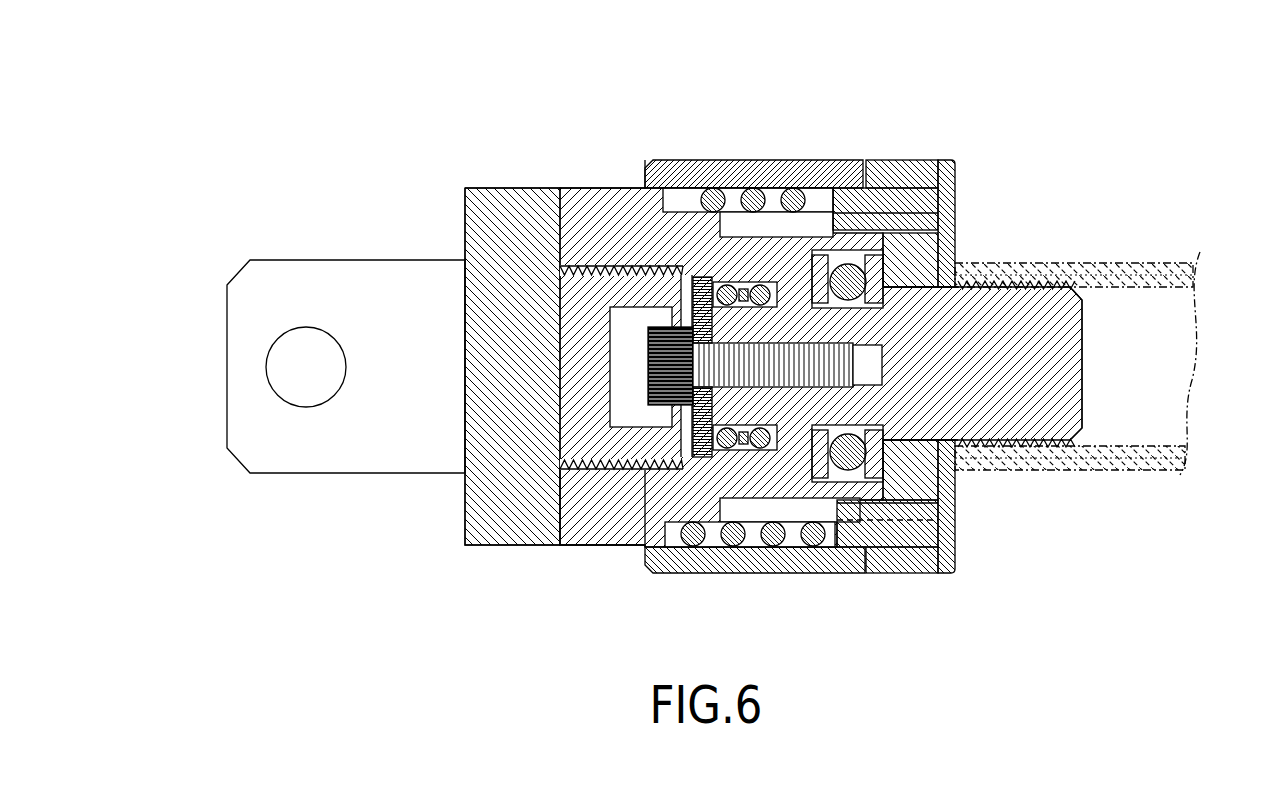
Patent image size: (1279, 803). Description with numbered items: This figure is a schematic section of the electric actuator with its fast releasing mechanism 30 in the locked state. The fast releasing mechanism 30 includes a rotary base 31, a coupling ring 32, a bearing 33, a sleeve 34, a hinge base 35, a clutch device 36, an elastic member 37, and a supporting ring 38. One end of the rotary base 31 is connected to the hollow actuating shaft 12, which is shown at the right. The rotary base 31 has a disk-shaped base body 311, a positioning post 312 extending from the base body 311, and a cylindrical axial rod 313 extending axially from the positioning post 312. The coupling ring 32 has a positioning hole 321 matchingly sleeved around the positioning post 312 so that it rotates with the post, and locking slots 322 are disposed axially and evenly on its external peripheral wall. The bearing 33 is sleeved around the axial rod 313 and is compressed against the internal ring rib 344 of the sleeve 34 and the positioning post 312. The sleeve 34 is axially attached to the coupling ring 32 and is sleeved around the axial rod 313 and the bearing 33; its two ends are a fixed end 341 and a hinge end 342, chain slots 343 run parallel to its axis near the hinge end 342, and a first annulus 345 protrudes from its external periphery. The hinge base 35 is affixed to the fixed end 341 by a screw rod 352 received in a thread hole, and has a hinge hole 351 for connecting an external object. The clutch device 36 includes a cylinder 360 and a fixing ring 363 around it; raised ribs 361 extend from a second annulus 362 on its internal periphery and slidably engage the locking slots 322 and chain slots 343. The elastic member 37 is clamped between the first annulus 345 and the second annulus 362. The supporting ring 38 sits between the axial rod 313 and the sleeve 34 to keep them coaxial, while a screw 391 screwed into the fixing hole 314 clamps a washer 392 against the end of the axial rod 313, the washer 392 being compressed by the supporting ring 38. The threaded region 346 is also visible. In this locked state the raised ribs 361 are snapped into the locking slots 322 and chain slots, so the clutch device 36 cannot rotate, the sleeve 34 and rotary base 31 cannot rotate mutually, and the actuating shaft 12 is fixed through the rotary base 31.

The actuating shaft 12 is at (1130, 265).
The fast releasing mechanism 30 is at (762, 300).
The rotary base 31 is at (957, 341).
The base body 311 is at (957, 182).
The positioning post 312 is at (935, 502).
The axial rod 313 is at (760, 235).
The fixing hole 314 is at (745, 300).
The coupling ring 32 is at (982, 367).
The positioning hole 321 is at (973, 308).
The locking slot 322 is at (945, 196).
The bearing 33 is at (803, 215).
The sleeve 34 is at (574, 373).
The fixed end 341 is at (545, 510).
The hinge end 342 is at (923, 512).
The chain slot 343 is at (772, 540).
The internal ring rib 344 is at (840, 548).
The first annulus 345 is at (612, 515).
The internal thread 346 is at (567, 290).
The hinge base 35 is at (355, 363).
The hinge hole 351 is at (287, 362).
The screw rod 352 is at (600, 262).
The clutch device 36 is at (808, 329).
The cylinder 360 is at (812, 172).
The raised rib 361 is at (937, 518).
The second annulus 362 is at (903, 574).
The fixing ring 363 is at (907, 175).
The elastic member 37 is at (733, 546).
The supporting ring 38 is at (762, 540).
The screw 391 is at (702, 290).
The washer 392 is at (684, 325).